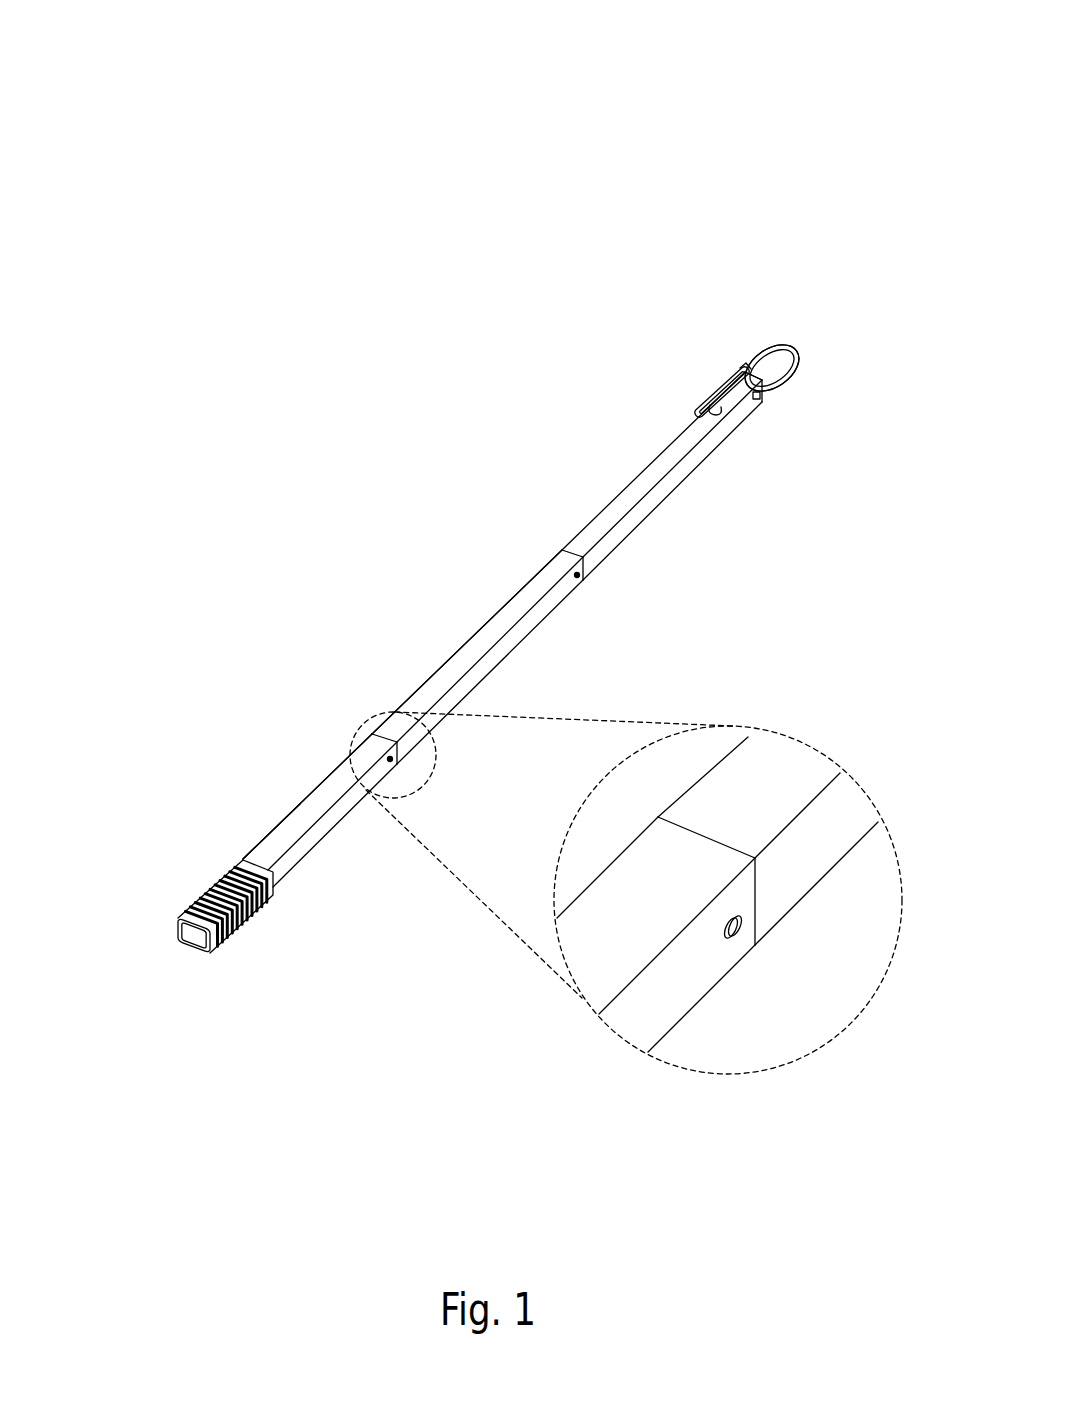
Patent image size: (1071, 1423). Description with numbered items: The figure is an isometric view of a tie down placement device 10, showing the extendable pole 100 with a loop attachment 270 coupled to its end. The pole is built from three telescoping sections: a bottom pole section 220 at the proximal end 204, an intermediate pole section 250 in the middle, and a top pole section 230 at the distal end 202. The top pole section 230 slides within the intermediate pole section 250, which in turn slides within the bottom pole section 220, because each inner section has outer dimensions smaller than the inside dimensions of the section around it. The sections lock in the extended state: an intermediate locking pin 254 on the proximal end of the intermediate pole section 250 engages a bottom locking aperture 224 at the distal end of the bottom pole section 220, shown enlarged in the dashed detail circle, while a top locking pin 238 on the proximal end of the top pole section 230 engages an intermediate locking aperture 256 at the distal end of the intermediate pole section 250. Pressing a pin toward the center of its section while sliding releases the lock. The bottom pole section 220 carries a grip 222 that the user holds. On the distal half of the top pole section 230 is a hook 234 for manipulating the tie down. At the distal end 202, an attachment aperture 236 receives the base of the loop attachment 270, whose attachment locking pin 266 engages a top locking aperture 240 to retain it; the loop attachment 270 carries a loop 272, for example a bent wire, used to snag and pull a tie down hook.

The tool system 10 is at (117, 187).
The tool 100 is at (561, 426).
The distal end 202 is at (847, 428).
The proximal end 204 is at (153, 898).
The bottom pole section 220 is at (298, 807).
The grip 222 is at (247, 917).
The bottom locking aperture 224 is at (726, 929).
The top pole section 230 is at (675, 490).
The hook 234 is at (704, 402).
The attachment aperture 236 is at (745, 371).
The top locking pin 238 is at (583, 580).
The top locking aperture 240 is at (757, 398).
The intermediate pole section 250 is at (474, 632).
The intermediate locking pin 254 is at (755, 945).
The intermediate locking aperture 256 is at (560, 549).
The attachment locking pin 266 is at (740, 382).
The loop attachment 270 is at (813, 354).
The loop 272 is at (780, 348).